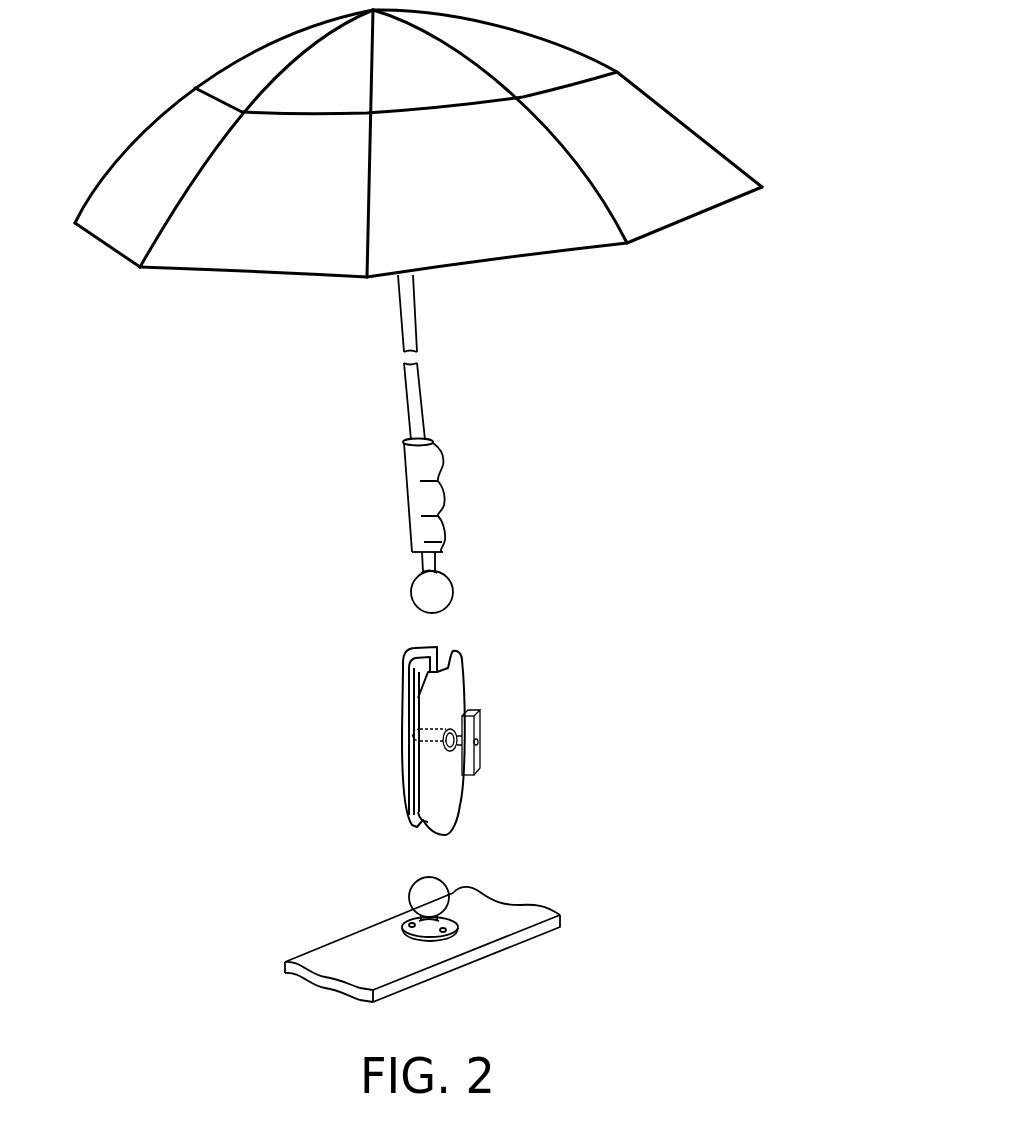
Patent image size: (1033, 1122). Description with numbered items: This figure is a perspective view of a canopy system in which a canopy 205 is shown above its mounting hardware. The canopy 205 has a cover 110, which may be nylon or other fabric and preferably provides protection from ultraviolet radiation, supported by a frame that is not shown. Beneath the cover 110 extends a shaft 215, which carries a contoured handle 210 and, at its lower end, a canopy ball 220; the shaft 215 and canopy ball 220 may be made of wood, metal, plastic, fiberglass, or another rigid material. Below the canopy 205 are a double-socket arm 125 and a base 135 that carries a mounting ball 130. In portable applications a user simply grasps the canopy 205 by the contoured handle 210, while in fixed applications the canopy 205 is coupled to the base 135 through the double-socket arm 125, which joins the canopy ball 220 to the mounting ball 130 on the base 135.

The cover 110 is at (653, 113).
The canopy 205 is at (632, 320).
The shaft 215 is at (417, 388).
The contoured handle 210 is at (410, 463).
The canopy ball 220 is at (440, 597).
The double-socket arm 125 is at (533, 760).
The mounting ball 130 is at (422, 900).
The base 135 is at (352, 967).